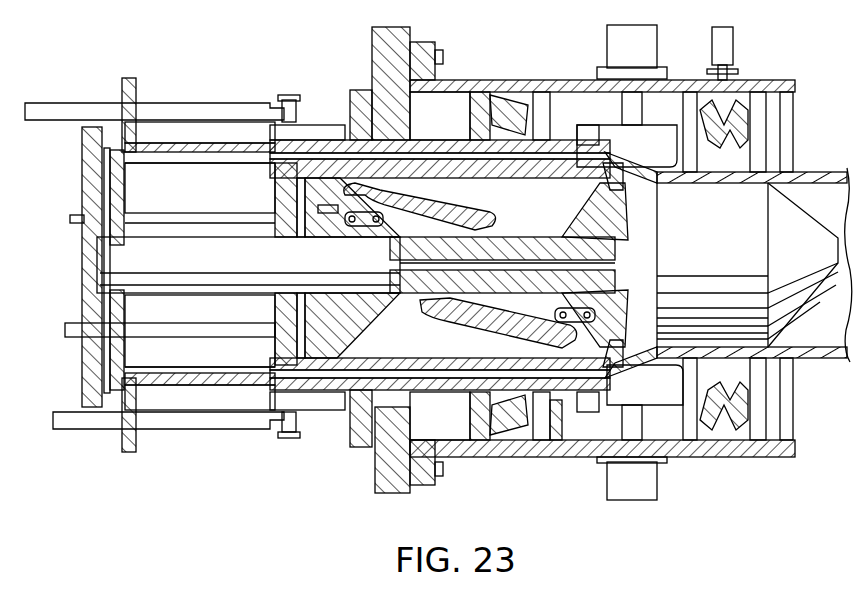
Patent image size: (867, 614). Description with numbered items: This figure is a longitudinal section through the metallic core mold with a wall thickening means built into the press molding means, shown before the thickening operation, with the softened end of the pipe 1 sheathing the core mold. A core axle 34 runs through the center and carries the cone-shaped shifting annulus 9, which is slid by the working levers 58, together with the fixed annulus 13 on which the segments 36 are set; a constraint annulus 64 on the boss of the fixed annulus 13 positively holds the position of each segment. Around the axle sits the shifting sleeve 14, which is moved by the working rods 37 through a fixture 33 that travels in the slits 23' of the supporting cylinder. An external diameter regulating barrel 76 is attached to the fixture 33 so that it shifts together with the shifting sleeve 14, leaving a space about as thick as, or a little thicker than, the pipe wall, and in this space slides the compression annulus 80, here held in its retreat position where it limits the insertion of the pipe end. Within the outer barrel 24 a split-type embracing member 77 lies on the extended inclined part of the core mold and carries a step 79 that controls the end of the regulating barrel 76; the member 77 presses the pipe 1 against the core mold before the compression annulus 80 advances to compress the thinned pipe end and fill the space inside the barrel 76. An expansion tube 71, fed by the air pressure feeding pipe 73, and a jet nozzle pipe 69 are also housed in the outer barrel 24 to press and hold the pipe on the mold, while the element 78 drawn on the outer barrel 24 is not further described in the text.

The pipe 1 is at (820, 172).
The shifting annulus 9 is at (366, 318).
The fixed annulus 13 is at (580, 211).
The shifting sleeve 14 is at (460, 170).
The slits 23' is at (200, 267).
The outer barrel 24 is at (745, 458).
The fixture 33 is at (298, 120).
The core axle 34 is at (497, 212).
The segments 36 is at (488, 325).
The working rods 37 is at (165, 112).
The working levers 58 is at (78, 215).
The constraint annulus 64 is at (605, 185).
The jet nozzle pipe 69 is at (546, 420).
The expansion tube 71 is at (745, 133).
The air pressure feeding pipe 73 is at (733, 45).
The external diameter regulating barrel 76 is at (428, 142).
The embracing member 77 is at (598, 130).
The bolt 78 is at (607, 45).
The step 79 is at (597, 411).
The compression annulus 80 is at (197, 157).